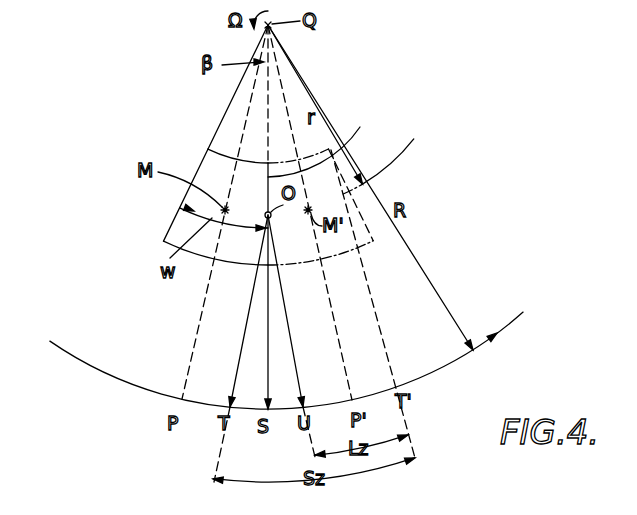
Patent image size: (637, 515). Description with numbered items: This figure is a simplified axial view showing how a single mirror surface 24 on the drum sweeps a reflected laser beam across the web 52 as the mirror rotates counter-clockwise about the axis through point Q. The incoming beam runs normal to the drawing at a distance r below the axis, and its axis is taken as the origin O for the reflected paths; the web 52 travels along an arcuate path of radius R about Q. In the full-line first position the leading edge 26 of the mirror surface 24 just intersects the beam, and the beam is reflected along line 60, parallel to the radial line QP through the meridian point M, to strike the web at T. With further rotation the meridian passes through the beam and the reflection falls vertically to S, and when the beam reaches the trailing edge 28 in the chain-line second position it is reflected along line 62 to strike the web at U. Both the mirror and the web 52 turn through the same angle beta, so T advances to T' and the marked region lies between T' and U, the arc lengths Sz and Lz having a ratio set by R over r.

The mirror surface 24 is at (210, 177).
The leading edge 26 is at (324, 144).
The trailing edge 28 is at (192, 211).
The web 52 is at (463, 359).
The reflection line 60 is at (242, 343).
The reflection line 62 is at (291, 339).